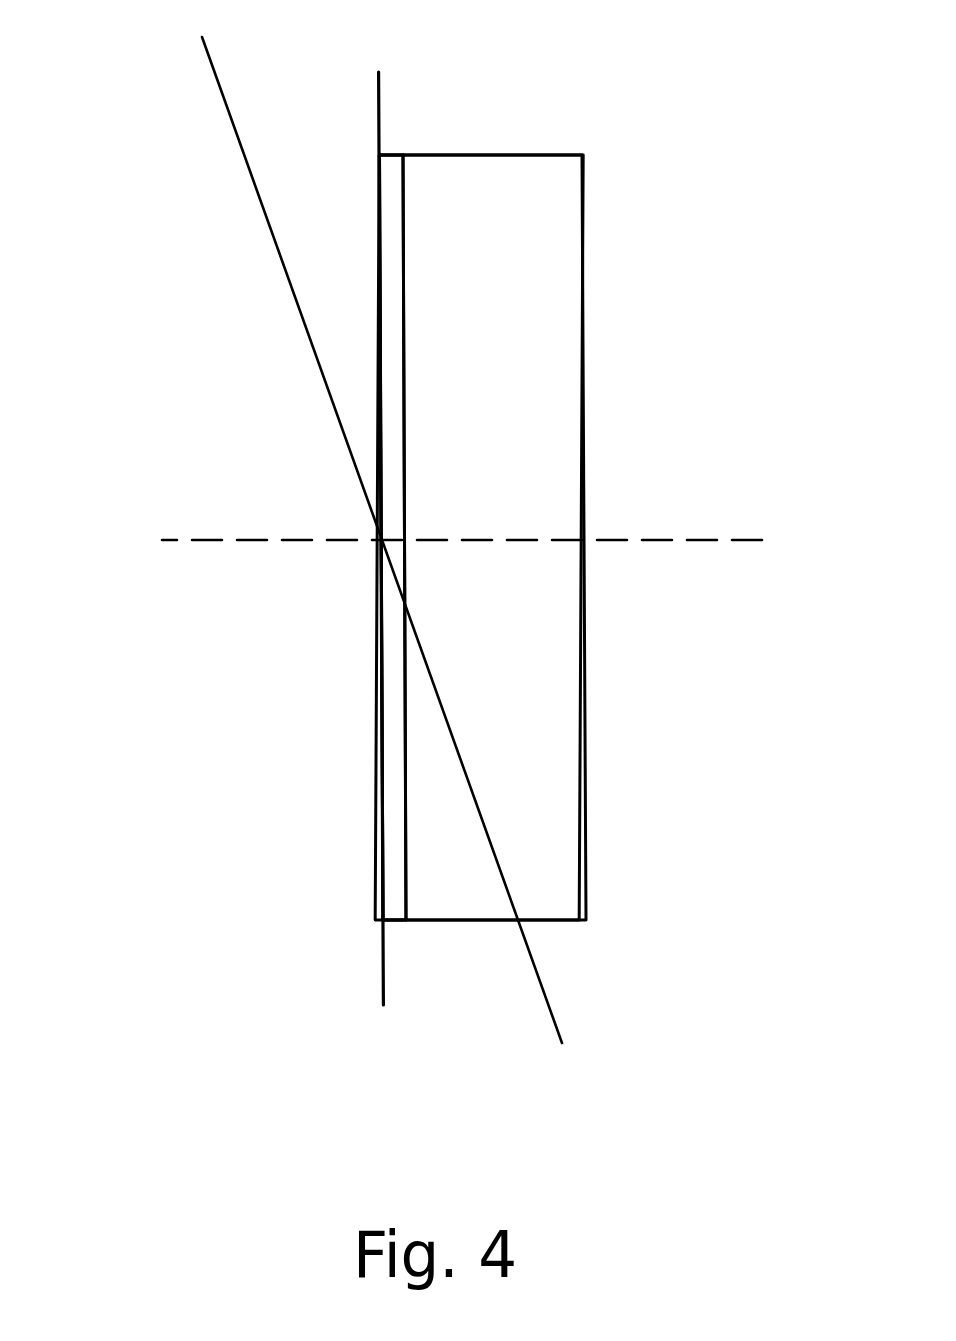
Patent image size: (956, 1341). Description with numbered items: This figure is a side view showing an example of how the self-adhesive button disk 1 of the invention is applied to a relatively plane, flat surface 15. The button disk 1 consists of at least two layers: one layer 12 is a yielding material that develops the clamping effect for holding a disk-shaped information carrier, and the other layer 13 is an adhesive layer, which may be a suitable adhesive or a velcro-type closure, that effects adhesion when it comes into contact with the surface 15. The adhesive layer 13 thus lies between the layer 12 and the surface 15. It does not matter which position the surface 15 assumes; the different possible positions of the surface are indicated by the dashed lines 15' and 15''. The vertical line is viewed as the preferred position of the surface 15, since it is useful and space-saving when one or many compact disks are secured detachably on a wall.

The button disk 1 is at (707, 403).
The layer of yielding material 12 is at (548, 803).
The adhesive layer 13 is at (395, 872).
The flat surface 15 is at (479, 502).
The surface position 15' is at (309, 540).
The surface position 15'' is at (427, 648).